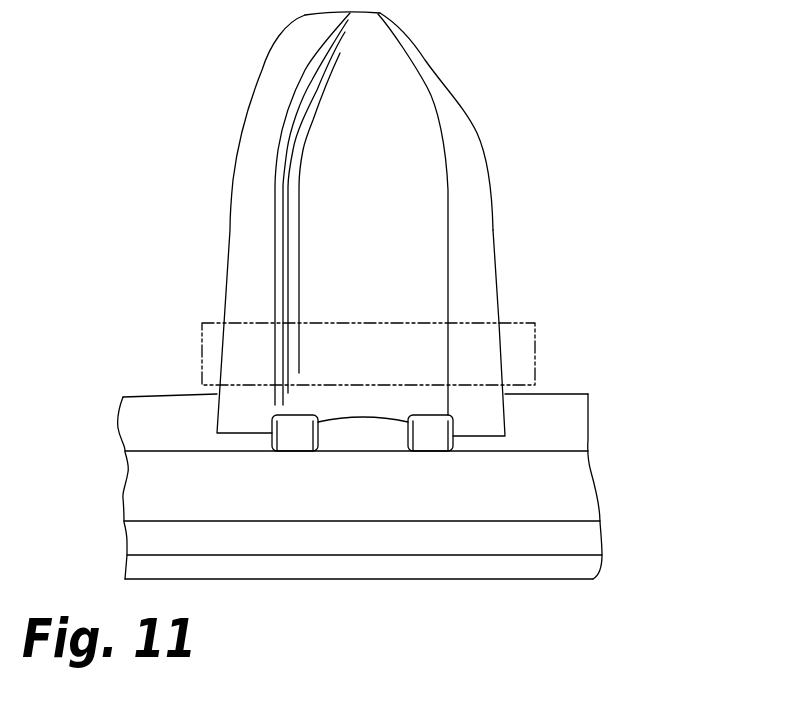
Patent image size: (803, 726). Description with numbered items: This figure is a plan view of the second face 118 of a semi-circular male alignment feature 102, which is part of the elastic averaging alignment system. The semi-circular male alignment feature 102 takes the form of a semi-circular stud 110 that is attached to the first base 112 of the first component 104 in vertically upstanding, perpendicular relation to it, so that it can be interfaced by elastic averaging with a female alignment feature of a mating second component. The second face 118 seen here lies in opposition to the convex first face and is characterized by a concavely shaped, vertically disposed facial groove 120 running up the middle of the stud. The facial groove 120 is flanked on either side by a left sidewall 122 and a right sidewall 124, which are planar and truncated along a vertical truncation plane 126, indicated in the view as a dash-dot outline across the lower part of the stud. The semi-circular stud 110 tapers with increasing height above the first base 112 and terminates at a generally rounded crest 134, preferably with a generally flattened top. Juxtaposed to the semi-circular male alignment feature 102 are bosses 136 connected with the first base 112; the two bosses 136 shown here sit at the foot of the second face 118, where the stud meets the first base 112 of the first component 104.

The semi-circular male alignment feature 102 is at (493, 218).
The first component 104 is at (612, 582).
The semi-circular stud 110 is at (477, 127).
The first base 112 is at (578, 405).
The second face 118 is at (482, 337).
The facial groove 120 is at (368, 265).
The left sidewall 122 is at (248, 262).
The right sidewall 124 is at (482, 305).
The truncation plane 126 is at (200, 337).
The rounded crest 134 is at (435, 25).
The bosses 136 is at (305, 435).